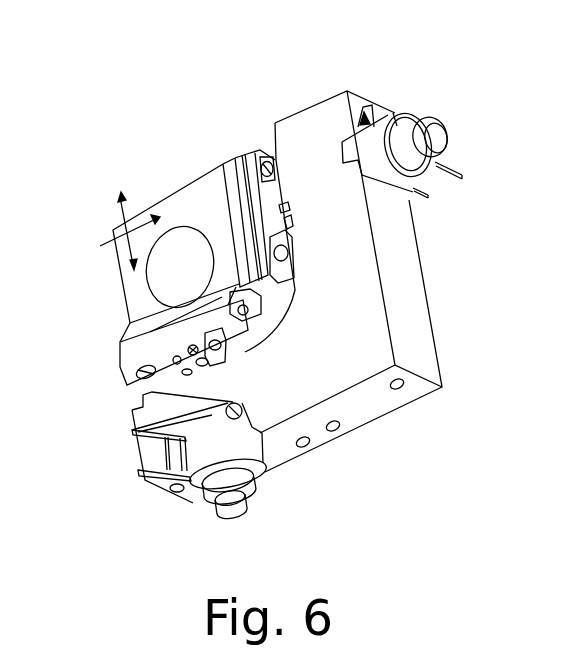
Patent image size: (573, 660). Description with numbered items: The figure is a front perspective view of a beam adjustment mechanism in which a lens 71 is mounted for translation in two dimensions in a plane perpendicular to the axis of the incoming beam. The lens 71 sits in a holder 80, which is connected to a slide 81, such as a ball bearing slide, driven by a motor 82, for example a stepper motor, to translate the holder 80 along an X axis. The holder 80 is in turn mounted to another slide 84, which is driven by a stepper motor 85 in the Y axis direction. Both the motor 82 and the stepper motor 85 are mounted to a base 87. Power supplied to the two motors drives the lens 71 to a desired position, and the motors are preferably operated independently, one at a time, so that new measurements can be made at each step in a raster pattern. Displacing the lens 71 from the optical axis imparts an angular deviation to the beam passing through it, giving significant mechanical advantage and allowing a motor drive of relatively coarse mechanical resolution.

The lens 71 is at (163, 273).
The holder 80 is at (193, 197).
The slide 81 is at (280, 197).
The motor 82 is at (395, 113).
The slide 84 is at (207, 362).
The stepper motor 85 is at (190, 487).
The base 87 is at (410, 330).